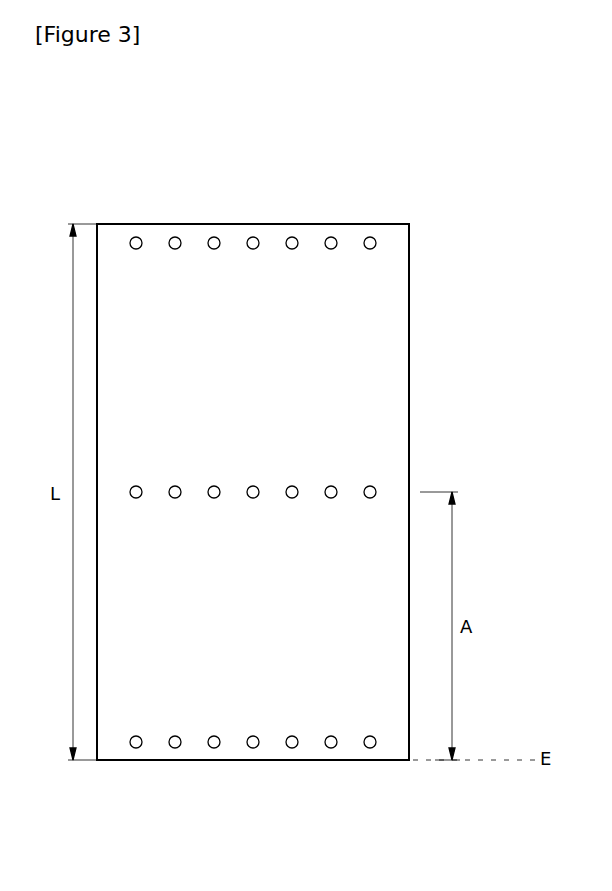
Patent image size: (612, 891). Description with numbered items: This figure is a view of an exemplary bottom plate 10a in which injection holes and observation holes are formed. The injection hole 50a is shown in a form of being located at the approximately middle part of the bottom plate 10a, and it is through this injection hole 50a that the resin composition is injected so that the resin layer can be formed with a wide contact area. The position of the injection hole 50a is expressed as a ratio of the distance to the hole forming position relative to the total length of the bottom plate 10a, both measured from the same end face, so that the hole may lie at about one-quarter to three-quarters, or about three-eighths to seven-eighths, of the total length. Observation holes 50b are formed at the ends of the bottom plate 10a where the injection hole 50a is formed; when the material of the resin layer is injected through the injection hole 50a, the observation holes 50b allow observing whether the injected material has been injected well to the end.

The bottom plate 10a is at (424, 178).
The injection hole 50a is at (370, 486).
The observation hole 50b is at (292, 237).